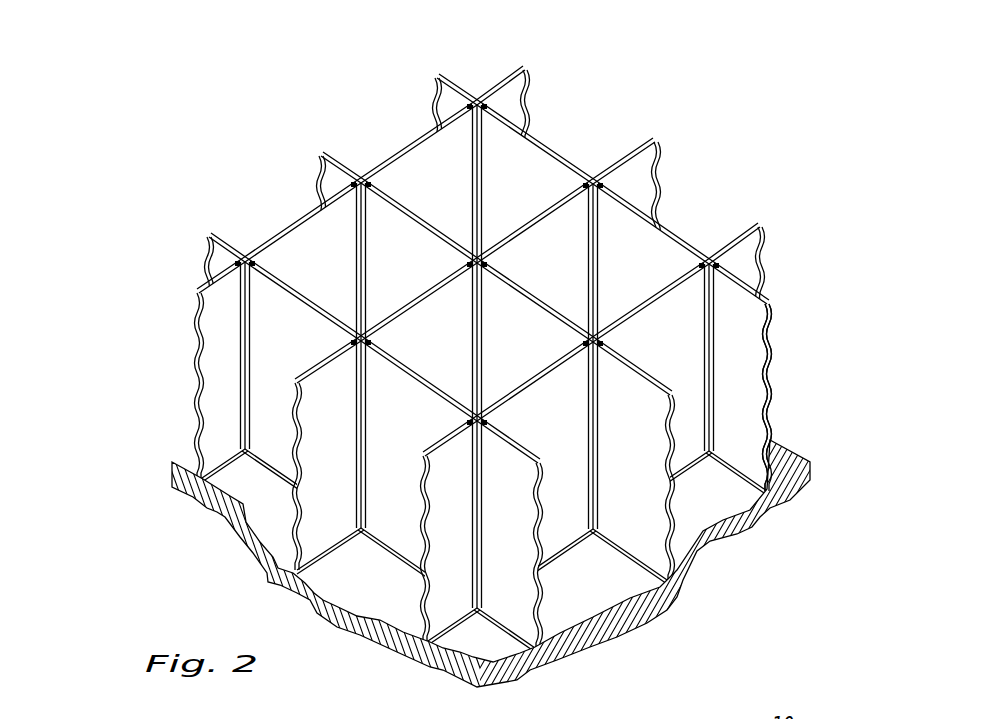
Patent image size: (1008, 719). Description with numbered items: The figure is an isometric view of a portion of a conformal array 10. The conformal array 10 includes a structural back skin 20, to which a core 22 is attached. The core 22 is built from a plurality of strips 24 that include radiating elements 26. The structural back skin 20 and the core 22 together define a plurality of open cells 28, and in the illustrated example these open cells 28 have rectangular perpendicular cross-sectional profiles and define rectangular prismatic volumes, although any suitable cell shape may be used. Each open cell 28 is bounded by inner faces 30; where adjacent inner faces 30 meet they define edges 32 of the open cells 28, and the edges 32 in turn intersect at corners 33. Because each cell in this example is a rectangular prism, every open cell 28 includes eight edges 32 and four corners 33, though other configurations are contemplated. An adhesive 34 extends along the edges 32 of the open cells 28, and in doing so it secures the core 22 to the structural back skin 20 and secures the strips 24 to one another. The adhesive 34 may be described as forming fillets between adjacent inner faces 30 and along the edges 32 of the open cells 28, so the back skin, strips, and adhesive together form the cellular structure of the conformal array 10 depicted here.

The conformal array 10 is at (494, 371).
The structural back skin 20 is at (512, 511).
The core 22 is at (168, 388).
The strips 24 is at (461, 345).
The radiating elements 26 is at (740, 138).
The open cells 28 is at (733, 223).
The inner faces 30 is at (501, 649).
The edges 32 is at (199, 407).
The corners 33 is at (230, 503).
The adhesive 34 is at (481, 186).